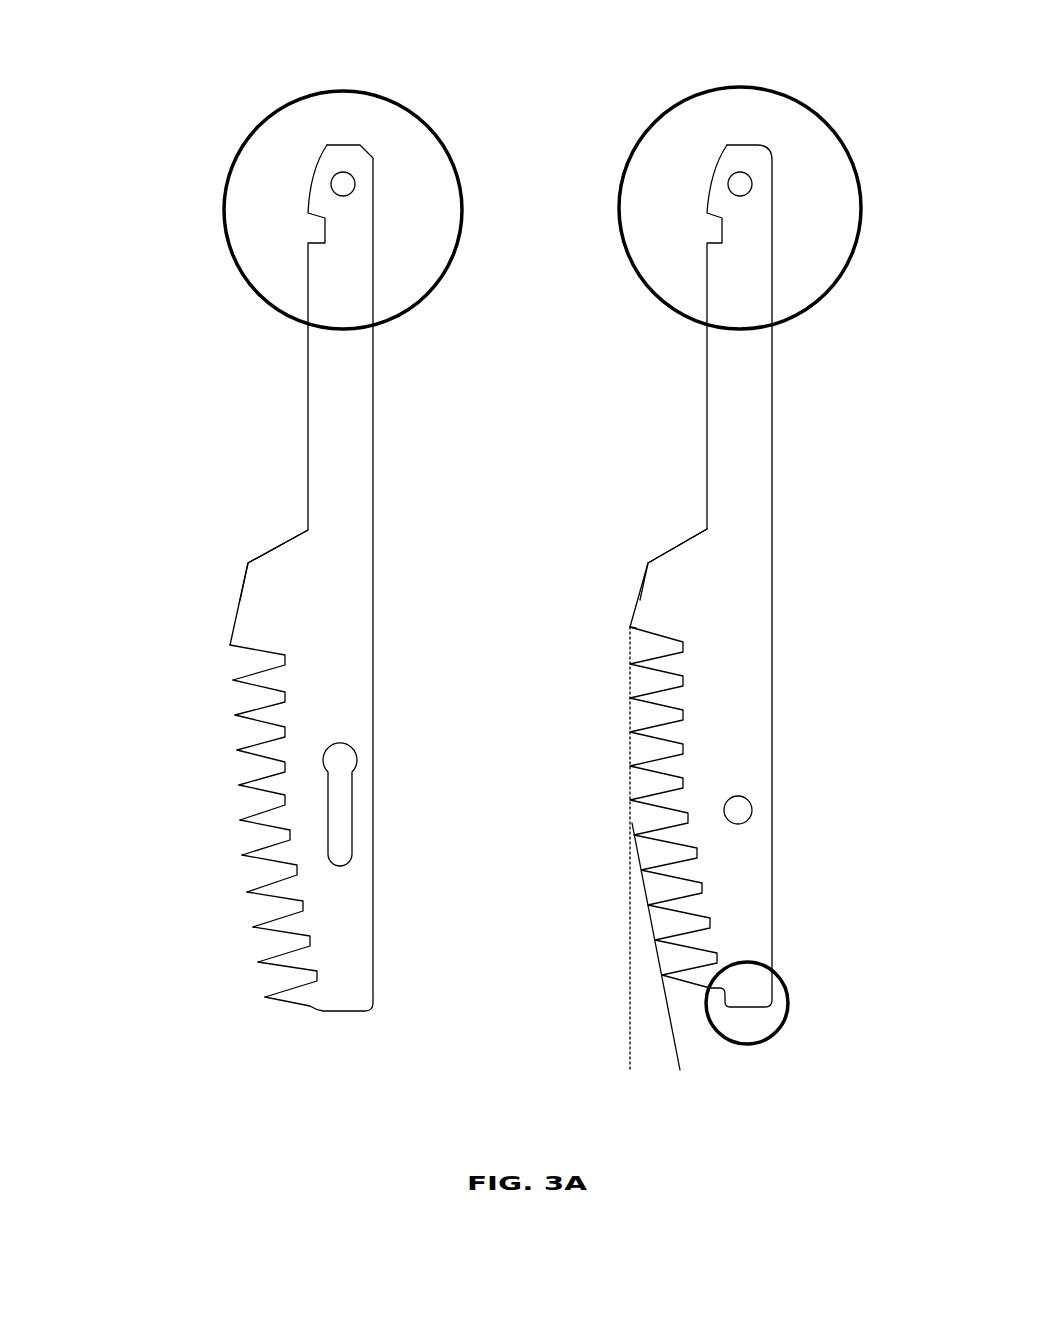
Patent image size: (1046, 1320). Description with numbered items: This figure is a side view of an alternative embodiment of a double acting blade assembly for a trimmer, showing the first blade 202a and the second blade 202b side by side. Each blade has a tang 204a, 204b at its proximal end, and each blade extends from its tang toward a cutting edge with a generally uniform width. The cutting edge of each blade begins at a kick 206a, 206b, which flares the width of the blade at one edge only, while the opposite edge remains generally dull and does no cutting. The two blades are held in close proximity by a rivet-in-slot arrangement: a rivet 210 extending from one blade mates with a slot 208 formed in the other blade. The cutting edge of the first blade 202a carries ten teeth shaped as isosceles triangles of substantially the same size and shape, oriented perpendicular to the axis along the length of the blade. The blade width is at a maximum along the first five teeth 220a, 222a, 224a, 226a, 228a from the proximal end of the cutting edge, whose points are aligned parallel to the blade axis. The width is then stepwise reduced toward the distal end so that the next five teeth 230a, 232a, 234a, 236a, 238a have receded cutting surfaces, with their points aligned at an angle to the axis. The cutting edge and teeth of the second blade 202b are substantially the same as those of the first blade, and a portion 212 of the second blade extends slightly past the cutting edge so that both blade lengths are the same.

The first blade 202a is at (210, 412).
The second blade 202b is at (617, 412).
The tang 204a is at (423, 125).
The tang 204b is at (830, 117).
The kick 206a is at (265, 583).
The kick 206b is at (663, 580).
The slot 208 is at (335, 805).
The rivet 210 is at (735, 806).
The portion 212 is at (790, 987).
The tooth 220a is at (246, 681).
The tooth 222a is at (248, 716).
The tooth 224a is at (250, 751).
The tooth 226a is at (252, 786).
The tooth 228a is at (253, 821).
The tooth 230a is at (255, 856).
The tooth 232a is at (260, 893).
The tooth 234a is at (266, 928).
The tooth 236a is at (271, 963).
The tooth 238a is at (278, 998).